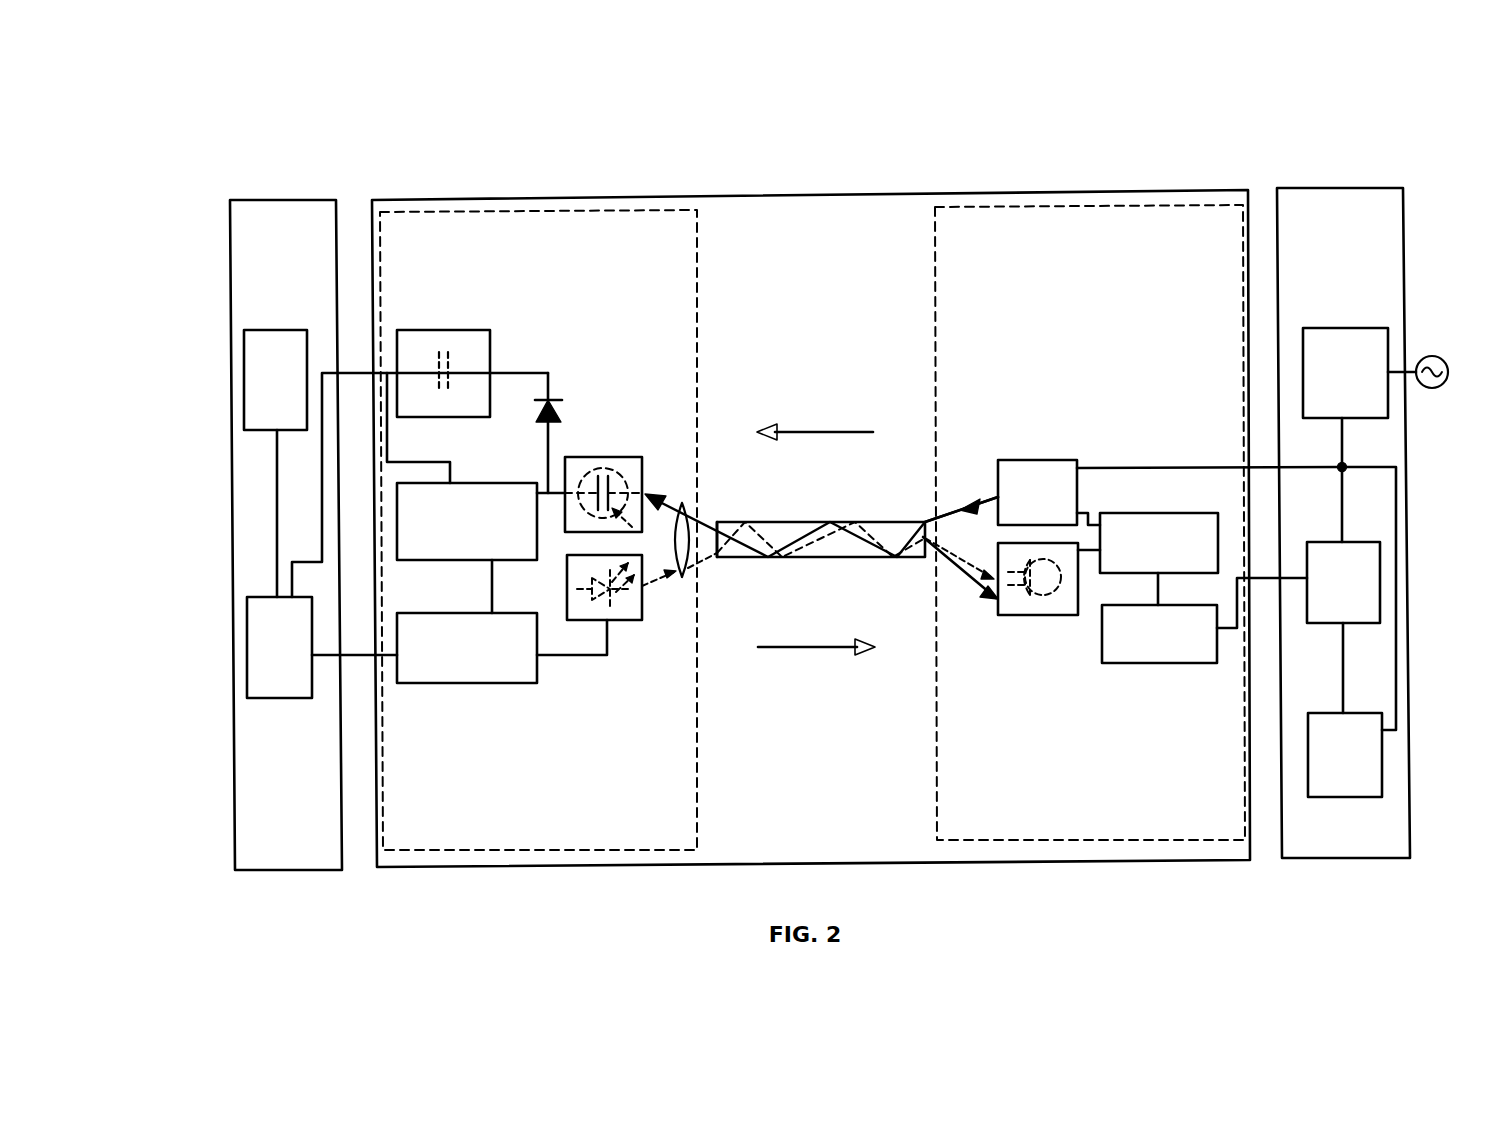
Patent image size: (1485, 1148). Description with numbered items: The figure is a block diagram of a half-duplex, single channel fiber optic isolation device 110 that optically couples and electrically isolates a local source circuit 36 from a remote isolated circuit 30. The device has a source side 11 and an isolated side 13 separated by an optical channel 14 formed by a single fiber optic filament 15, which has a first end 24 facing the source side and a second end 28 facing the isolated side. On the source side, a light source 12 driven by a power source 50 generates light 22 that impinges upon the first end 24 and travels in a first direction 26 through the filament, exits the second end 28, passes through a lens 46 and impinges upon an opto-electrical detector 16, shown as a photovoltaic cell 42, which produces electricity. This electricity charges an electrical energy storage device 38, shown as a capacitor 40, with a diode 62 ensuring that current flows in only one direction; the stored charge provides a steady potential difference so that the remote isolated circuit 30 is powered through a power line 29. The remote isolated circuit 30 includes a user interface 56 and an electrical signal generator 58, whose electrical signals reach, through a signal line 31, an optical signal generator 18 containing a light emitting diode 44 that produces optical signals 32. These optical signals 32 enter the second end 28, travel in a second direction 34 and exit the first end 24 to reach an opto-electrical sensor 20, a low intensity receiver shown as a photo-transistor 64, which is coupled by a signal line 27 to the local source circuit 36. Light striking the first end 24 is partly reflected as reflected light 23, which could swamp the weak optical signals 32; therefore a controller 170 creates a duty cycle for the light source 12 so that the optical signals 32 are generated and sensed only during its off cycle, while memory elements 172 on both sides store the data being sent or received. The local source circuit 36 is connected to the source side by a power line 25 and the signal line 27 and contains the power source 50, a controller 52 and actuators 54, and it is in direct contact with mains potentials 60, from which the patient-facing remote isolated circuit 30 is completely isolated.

The source side 11 is at (1100, 228).
The light source 12 is at (1052, 460).
The isolated side 13 is at (555, 230).
The optical channel 14 is at (832, 522).
The fiber optic filament 15 is at (812, 558).
The opto-electrical detector 16 is at (628, 457).
The optical signal generator 18 is at (637, 620).
The opto-electrical sensor 20 is at (1055, 615).
The light 22 is at (982, 500).
The reflected light 23 is at (937, 584).
The first end 24 is at (925, 522).
The power line 25 is at (1268, 467).
The first direction 26 is at (830, 432).
The signal line 27 is at (1265, 582).
The second end 28 is at (717, 522).
The power line 29 is at (348, 373).
The remote isolated circuit 30 is at (280, 178).
The signal line 31 is at (355, 658).
The optical signals 32 is at (648, 590).
The second direction 34 is at (800, 647).
The local source circuit 36 is at (1348, 163).
The electrical energy storage device 38 is at (415, 330).
The capacitor 40 is at (460, 360).
The photovoltaic cell 42 is at (592, 457).
The light emitting diode 44 is at (613, 620).
The lens 46 is at (682, 508).
The power source 50 is at (1316, 328).
The controller 52 is at (1362, 542).
The actuators 54 is at (1363, 713).
The user interface 56 is at (265, 330).
The electrical signal generator 58 is at (263, 698).
The mains potentials 60 is at (1432, 390).
The diode 62 is at (550, 398).
The photo-transistor 64 is at (1028, 600).
The half-duplex, single channel fiber optic isolation device 110 is at (818, 238).
The controller 170 is at (467, 481).
The memory elements 172 is at (483, 683).